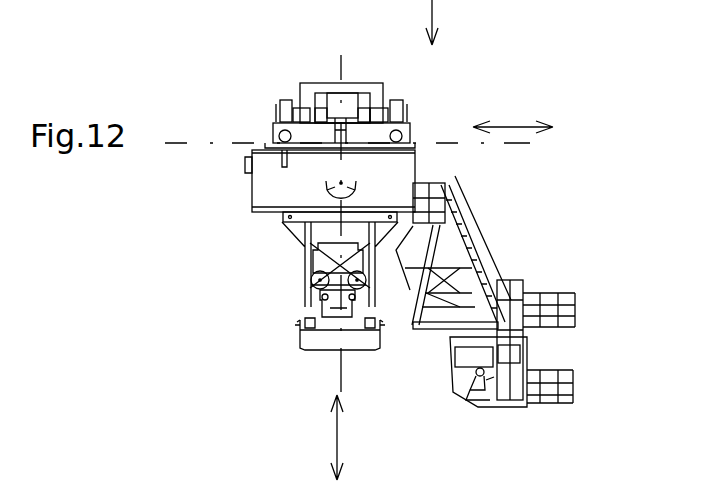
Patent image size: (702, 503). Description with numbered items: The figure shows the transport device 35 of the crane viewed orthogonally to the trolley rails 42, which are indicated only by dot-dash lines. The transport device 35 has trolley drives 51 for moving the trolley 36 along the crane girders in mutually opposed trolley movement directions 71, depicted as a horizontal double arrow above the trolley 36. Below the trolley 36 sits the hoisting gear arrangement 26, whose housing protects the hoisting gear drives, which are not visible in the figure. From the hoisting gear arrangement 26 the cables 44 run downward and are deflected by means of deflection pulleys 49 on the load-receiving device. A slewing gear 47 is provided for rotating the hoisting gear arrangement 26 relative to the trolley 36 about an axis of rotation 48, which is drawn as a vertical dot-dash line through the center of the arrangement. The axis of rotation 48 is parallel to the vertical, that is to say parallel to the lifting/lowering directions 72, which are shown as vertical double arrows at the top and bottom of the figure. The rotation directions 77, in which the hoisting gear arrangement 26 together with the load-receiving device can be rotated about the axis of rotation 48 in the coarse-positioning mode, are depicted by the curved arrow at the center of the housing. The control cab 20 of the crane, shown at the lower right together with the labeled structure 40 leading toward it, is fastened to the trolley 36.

The control cab 20 is at (518, 365).
The hoisting gear arrangement 26 is at (255, 192).
The transport device 35 is at (260, 52).
The trolley 36 is at (352, 98).
The tower with stairway 40 is at (540, 0).
The trolley rails 42 is at (500, 148).
The cables 44 is at (312, 260).
The slewing gear 47 is at (356, 160).
The axis of rotation 48 is at (342, 58).
The deflection pulleys 49 is at (607, 3).
The trolley drives 51 is at (400, 107).
The trolley movement directions 71 is at (512, 123).
The lifting/lowering directions 72 is at (385, 470).
The rotation directions 77 is at (360, 185).